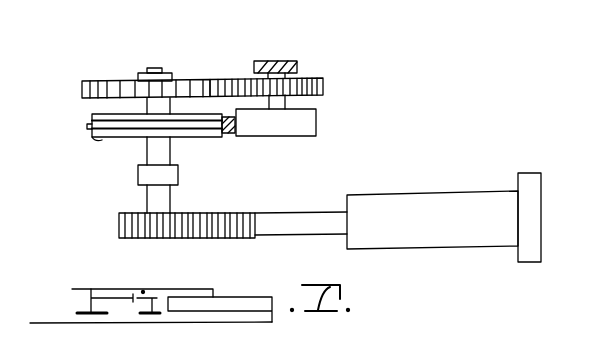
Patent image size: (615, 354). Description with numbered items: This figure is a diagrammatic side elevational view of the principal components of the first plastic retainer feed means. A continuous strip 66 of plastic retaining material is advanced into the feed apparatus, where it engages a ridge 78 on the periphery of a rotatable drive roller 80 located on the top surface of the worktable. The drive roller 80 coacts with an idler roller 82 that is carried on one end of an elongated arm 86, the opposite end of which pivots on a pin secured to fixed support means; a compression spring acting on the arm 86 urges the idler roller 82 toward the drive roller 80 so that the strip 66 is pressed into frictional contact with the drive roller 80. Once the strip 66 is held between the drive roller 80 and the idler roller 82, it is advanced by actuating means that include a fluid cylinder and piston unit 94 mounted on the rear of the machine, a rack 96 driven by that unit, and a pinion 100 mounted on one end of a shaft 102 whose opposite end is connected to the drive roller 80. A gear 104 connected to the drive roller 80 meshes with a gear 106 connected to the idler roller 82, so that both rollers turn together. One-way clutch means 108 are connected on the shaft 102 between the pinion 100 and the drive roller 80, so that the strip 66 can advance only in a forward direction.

The strip of plastic retaining material 66 is at (236, 143).
The ridge 78 is at (88, 126).
The drive roller 80 is at (98, 137).
The idler roller 82 is at (303, 120).
The elongated arm 86 is at (280, 60).
The fluid cylinder and piston unit 94 is at (405, 193).
The rack 96 is at (228, 238).
The pinion 100 is at (146, 238).
The shaft 102 is at (155, 200).
The gear 104 is at (104, 88).
The gear 106 is at (318, 76).
The one-way clutch means 108 is at (145, 177).